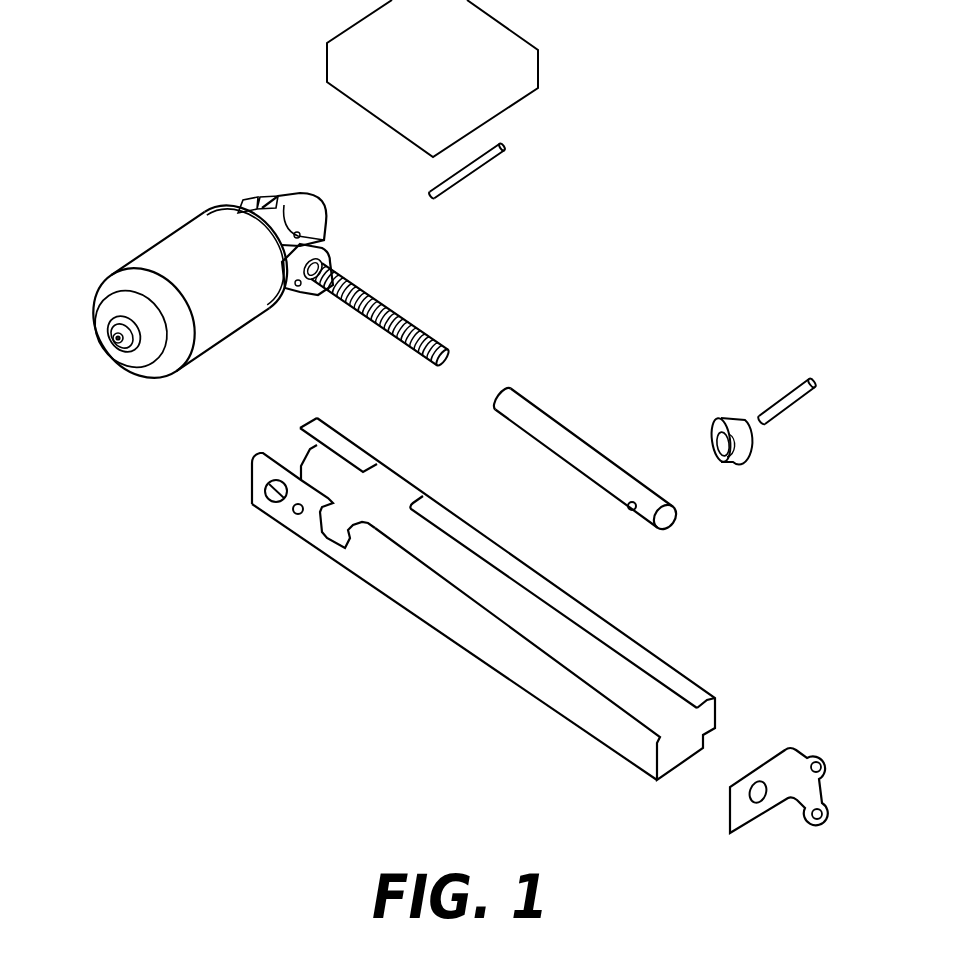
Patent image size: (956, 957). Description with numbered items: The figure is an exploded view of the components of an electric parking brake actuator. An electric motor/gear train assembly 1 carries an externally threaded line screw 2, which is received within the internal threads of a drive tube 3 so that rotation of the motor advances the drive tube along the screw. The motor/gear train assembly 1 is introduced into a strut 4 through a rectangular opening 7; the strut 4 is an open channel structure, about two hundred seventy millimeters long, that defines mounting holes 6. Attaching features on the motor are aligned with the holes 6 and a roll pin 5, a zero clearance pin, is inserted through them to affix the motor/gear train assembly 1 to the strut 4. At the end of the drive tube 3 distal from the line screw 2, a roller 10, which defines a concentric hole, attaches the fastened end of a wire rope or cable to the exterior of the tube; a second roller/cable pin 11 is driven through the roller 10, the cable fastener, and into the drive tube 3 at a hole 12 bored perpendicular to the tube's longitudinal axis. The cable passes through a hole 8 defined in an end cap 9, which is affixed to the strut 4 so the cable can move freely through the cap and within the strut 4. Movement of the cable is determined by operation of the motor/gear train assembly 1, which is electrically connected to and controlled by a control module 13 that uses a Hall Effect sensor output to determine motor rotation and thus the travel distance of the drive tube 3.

The electric motor/gear train assembly 1 is at (120, 269).
The threaded line screw 2 is at (414, 318).
The drive tube 3 is at (523, 392).
The strut 4 is at (252, 503).
The roll pin 5 is at (497, 163).
The mounting hole 6 is at (297, 525).
The rectangular opening 7 is at (368, 508).
The hole 8 is at (762, 807).
The end cap 9 is at (795, 752).
The roller 10 is at (753, 453).
The roller/cable pin 11 is at (805, 397).
The hole 12 is at (627, 513).
The control module 13 is at (538, 68).